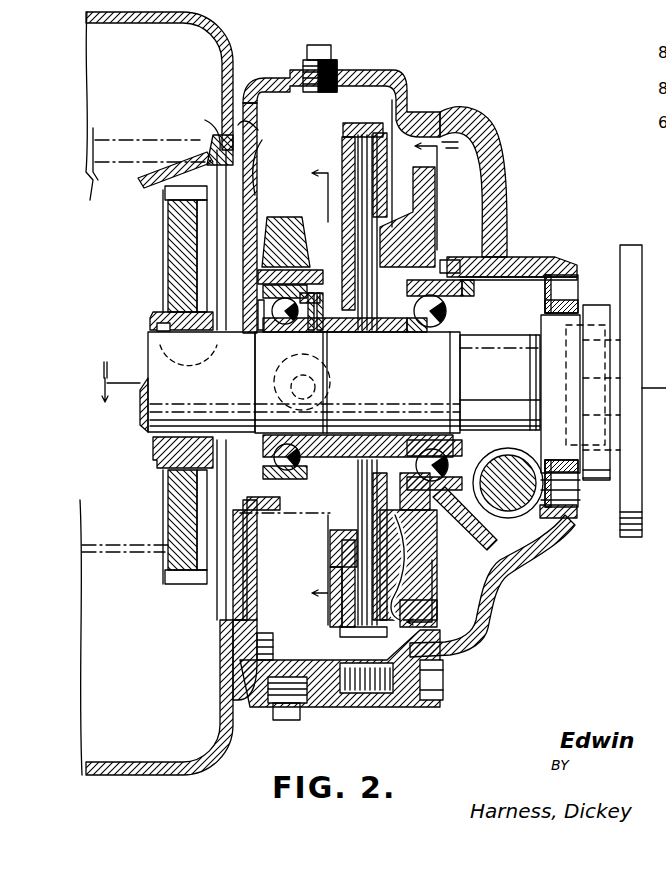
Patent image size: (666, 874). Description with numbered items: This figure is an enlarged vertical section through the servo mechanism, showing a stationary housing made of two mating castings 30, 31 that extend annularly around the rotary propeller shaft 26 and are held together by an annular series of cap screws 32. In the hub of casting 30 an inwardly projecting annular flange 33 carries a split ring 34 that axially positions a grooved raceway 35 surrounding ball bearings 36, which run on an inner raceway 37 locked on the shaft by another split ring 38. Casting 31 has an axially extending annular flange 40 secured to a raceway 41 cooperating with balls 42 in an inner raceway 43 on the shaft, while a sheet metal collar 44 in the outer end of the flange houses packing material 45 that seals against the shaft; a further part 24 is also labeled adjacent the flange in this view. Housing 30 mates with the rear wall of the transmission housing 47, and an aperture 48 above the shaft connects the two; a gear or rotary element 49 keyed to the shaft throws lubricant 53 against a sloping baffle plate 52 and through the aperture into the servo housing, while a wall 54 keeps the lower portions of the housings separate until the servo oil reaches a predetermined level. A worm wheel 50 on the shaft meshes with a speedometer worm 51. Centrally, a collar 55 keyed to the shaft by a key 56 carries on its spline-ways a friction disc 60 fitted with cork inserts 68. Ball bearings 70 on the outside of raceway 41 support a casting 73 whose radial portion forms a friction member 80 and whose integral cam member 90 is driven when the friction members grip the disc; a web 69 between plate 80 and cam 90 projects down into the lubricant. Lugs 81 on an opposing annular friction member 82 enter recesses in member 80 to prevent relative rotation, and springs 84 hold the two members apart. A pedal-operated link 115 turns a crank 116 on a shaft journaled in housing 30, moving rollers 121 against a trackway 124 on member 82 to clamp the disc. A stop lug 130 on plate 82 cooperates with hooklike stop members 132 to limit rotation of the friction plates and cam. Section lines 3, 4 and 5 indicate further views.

The section line 3 is at (120, 399).
The section line 4 is at (309, 394).
The section line 5 is at (431, 381).
The spacer 24 is at (442, 260).
The propeller shaft 26 is at (150, 345).
The housing casting 30 is at (262, 76).
The housing casting 31 is at (448, 112).
The cap screws 32 is at (445, 683).
The annular flange 33 is at (258, 274).
The split ring 34 is at (312, 335).
The annular raceway 35 is at (300, 298).
The ball bearings 36 is at (262, 318).
The inner raceway 37 is at (290, 440).
The split ring 38 is at (262, 440).
The annular flange 40 is at (512, 255).
The annular raceway 41 is at (470, 292).
The balls 42 is at (455, 300).
The inner raceway 43 is at (415, 333).
The sheet metal collar 44 is at (577, 300).
The packing material 45 is at (580, 285).
The transmission housing 47 is at (222, 80).
The aperture 48 is at (262, 146).
The rotary element 49 is at (168, 515).
The worm wheel 50 is at (480, 348).
The worm 51 is at (540, 552).
The baffle plate 52 is at (212, 150).
The lubricant 53 is at (108, 545).
The wall 54 is at (235, 590).
The collar 55 is at (400, 430).
The key 56 is at (385, 335).
The friction disc 60 is at (340, 632).
The cork inserts 68 is at (332, 540).
The web 69 is at (445, 663).
The ball bearings 70 is at (436, 550).
The casting 73 is at (435, 575).
The friction member 80 is at (440, 600).
The lugs 81 is at (372, 124).
The friction member 82 is at (342, 160).
The spring members 84 is at (355, 660).
The cam member 90 is at (436, 190).
The operating link 115 is at (141, 182).
The crank 116 is at (166, 210).
The rollers 121 is at (240, 372).
The trackway 124 is at (330, 556).
The stop lug 130 is at (318, 240).
The stop members 132 is at (410, 400).